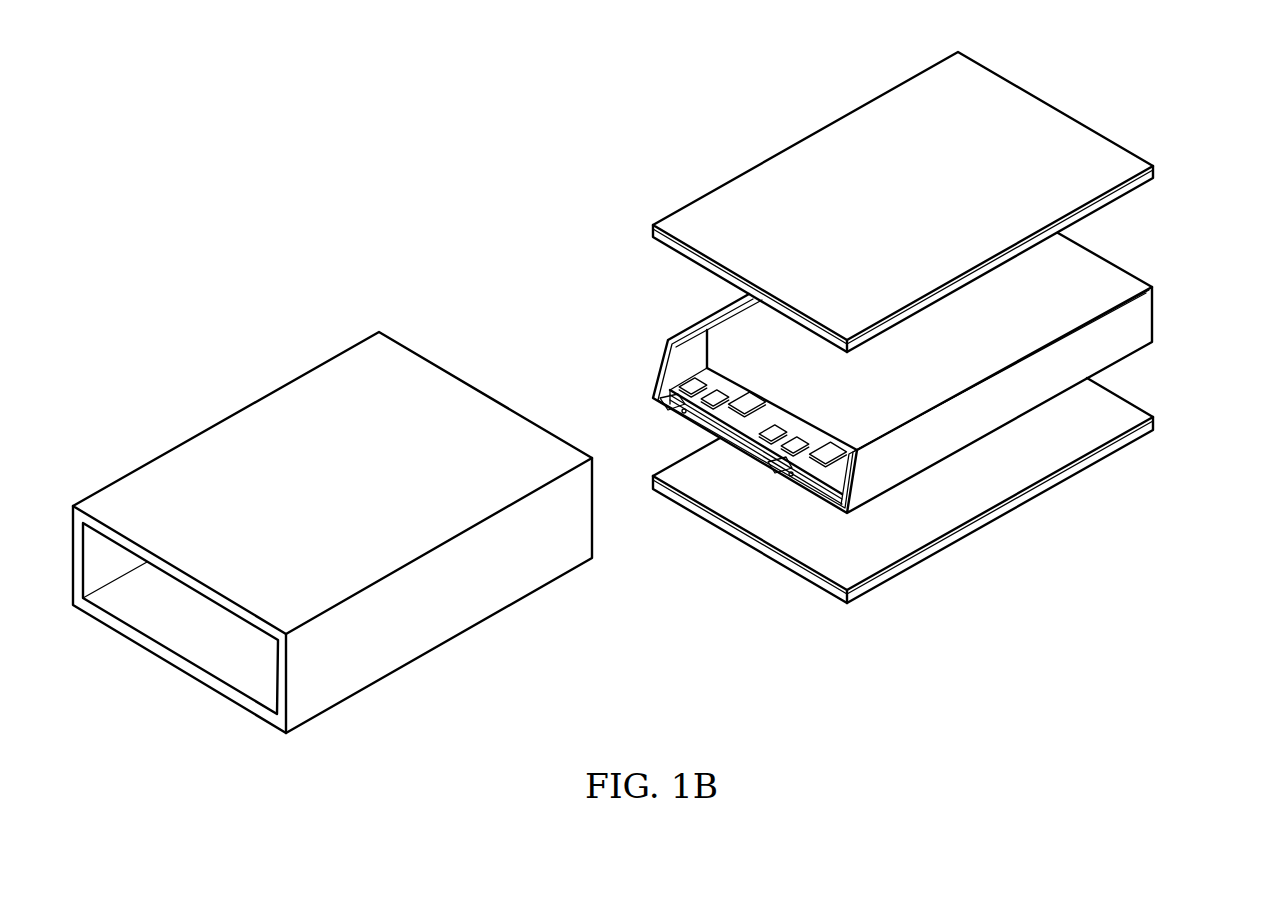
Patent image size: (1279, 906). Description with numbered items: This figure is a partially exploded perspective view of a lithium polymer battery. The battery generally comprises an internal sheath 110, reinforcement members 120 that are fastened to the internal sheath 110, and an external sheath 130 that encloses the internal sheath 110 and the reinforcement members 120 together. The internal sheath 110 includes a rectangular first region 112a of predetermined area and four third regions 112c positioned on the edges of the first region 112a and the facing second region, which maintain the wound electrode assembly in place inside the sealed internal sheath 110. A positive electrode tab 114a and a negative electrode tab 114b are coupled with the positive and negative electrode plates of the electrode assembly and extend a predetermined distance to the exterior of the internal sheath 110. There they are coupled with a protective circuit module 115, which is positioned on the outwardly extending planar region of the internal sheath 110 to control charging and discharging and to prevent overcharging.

The internal sheath 110 is at (1145, 264).
The first region 112a is at (1071, 260).
The third region 112c is at (1123, 332).
The positive electrode tab 114a is at (777, 476).
The negative electrode tab 114b is at (674, 404).
The protective circuit module 115 is at (750, 423).
The reinforcement member 120 is at (1072, 106).
The external sheath 130 is at (235, 401).